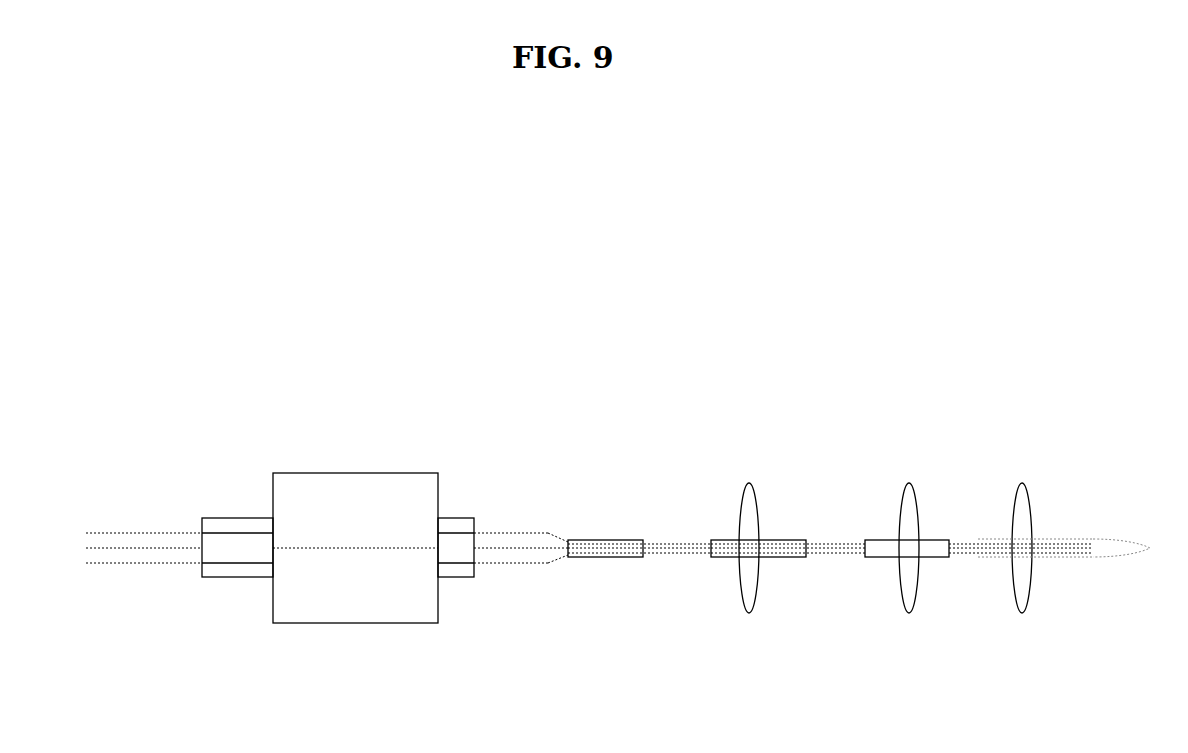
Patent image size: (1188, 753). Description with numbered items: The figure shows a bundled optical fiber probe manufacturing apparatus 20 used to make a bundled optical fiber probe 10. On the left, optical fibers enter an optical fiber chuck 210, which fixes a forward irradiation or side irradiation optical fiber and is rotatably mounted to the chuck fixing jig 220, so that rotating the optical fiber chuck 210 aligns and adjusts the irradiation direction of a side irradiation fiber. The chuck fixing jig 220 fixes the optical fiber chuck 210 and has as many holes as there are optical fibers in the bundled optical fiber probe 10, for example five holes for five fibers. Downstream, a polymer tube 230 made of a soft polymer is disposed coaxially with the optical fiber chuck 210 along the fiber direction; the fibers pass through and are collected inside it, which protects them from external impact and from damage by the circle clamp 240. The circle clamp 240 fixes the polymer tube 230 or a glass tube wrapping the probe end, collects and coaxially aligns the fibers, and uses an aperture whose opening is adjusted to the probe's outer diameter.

The bundled optical fiber probe 10 is at (139, 563).
The bundled optical fiber probe manufacturing apparatus 20 is at (612, 363).
The optical fiber chuck 210 is at (237, 578).
The chuck fixing jig 220 is at (353, 625).
The polymer tube 230 is at (605, 557).
The circle clamp 240 is at (750, 613).